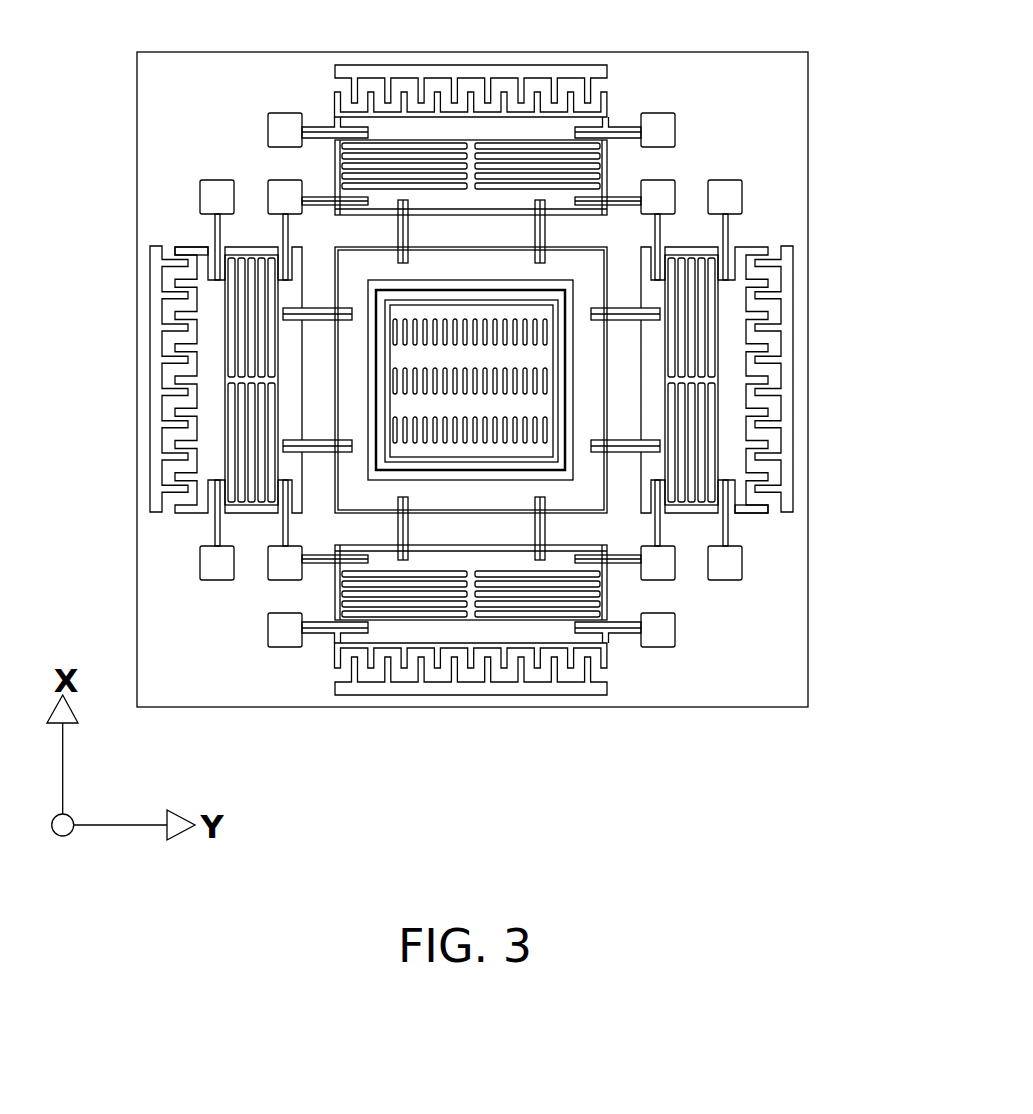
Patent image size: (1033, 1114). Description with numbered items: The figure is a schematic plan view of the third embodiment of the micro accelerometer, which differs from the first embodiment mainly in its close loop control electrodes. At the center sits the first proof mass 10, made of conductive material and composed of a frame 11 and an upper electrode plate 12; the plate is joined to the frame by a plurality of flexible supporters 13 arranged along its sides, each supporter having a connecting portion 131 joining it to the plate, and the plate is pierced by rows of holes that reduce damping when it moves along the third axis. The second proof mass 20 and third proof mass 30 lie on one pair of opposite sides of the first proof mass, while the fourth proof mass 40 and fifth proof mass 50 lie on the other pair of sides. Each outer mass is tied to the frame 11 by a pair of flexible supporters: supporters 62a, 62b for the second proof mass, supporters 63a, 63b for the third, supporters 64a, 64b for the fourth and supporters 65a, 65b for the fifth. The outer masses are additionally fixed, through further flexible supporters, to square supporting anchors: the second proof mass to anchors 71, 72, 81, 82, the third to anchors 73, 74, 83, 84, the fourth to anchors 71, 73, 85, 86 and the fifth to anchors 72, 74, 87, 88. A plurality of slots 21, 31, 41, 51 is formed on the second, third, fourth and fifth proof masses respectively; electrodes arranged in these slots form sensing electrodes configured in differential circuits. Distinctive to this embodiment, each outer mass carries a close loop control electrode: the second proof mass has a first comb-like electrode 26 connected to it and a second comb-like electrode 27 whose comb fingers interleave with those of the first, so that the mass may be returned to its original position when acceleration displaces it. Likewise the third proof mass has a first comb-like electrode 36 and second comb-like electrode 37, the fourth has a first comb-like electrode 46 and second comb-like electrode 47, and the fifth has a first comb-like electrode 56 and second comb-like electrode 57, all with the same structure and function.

The first proof mass 10 is at (326, 511).
The frame 11 is at (600, 248).
The upper electrode plate 12 is at (430, 455).
The flexible supporters 13 is at (418, 285).
The sensing electrode 131 is at (550, 290).
The second proof mass 20 is at (461, 656).
The slots 21 is at (535, 605).
The first comb-like electrode 26 is at (335, 650).
The second comb-like electrode 27 is at (400, 690).
The third proof mass 30 is at (480, 120).
The slots 31 is at (412, 150).
The first comb-like electrode 36 is at (608, 108).
The second comb-like electrode 37 is at (555, 93).
The fourth proof mass 40 is at (194, 385).
The slots 41 is at (240, 408).
The first comb-like electrode 46 is at (190, 245).
The second comb-like electrode 47 is at (178, 322).
The fifth proof mass 50 is at (750, 373).
The slots 51 is at (700, 345).
The first comb-like electrode 56 is at (745, 525).
The second comb-like electrode 57 is at (765, 425).
The flexible supporter 62a is at (400, 520).
The flexible supporter 62b is at (538, 520).
The flexible supporter 63a is at (400, 232).
The flexible supporter 63b is at (538, 232).
The flexible supporter 64a is at (313, 315).
The flexible supporter 64b is at (313, 448).
The flexible supporter 65a is at (632, 315).
The flexible supporter 65b is at (630, 448).
The supporting anchor 71 is at (268, 575).
The supporting anchor 72 is at (675, 565).
The supporting anchor 73 is at (270, 185).
The supporting anchor 74 is at (672, 190).
The supporting anchor 81 is at (283, 647).
The supporting anchor 82 is at (655, 647).
The supporting anchor 83 is at (283, 113).
The supporting anchor 84 is at (657, 120).
The supporting anchor 85 is at (200, 570).
The supporting anchor 86 is at (203, 190).
The supporting anchor 87 is at (742, 575).
The supporting anchor 88 is at (742, 197).